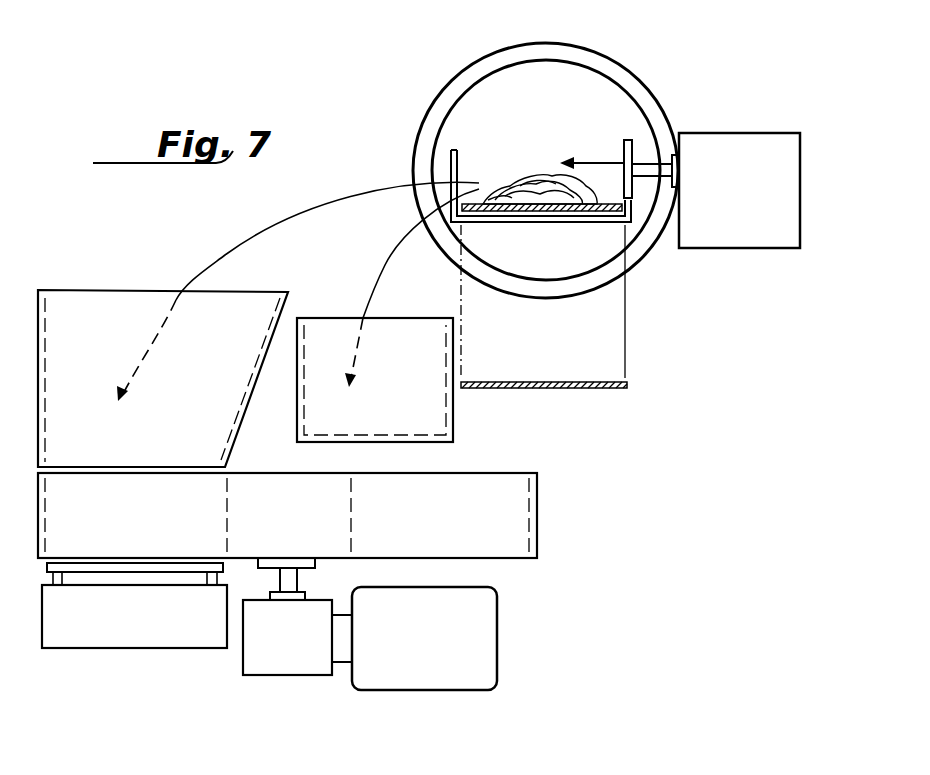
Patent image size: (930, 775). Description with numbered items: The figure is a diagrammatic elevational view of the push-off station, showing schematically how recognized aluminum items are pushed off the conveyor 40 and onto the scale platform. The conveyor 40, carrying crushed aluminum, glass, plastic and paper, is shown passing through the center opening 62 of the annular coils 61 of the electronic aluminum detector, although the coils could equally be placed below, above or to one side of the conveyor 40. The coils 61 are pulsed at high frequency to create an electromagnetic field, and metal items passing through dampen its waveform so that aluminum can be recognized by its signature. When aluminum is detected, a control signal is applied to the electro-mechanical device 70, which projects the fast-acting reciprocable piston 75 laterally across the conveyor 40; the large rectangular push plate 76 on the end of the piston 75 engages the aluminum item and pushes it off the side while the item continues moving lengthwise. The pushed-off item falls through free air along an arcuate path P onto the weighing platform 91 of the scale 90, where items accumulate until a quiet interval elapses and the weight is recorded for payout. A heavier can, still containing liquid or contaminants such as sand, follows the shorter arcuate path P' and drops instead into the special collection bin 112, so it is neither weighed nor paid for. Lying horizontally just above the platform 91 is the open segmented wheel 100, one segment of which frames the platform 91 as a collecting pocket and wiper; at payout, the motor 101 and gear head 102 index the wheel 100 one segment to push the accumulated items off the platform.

The annular coils 61 is at (614, 78).
The center opening 62 is at (500, 100).
The conveyor 40 is at (593, 216).
The electro-mechanical device 70 is at (747, 127).
The reciprocable piston 75 is at (641, 168).
The push plate 76 is at (623, 148).
The collection bin 112 is at (425, 412).
The segmented wheel 100 is at (546, 517).
The motor 101 is at (472, 643).
The gear head 102 is at (262, 656).
The scale 90 is at (113, 656).
The weighing platform 91 is at (83, 567).
The arcuate path P is at (298, 291).
The shorter arcuate path P' is at (404, 288).